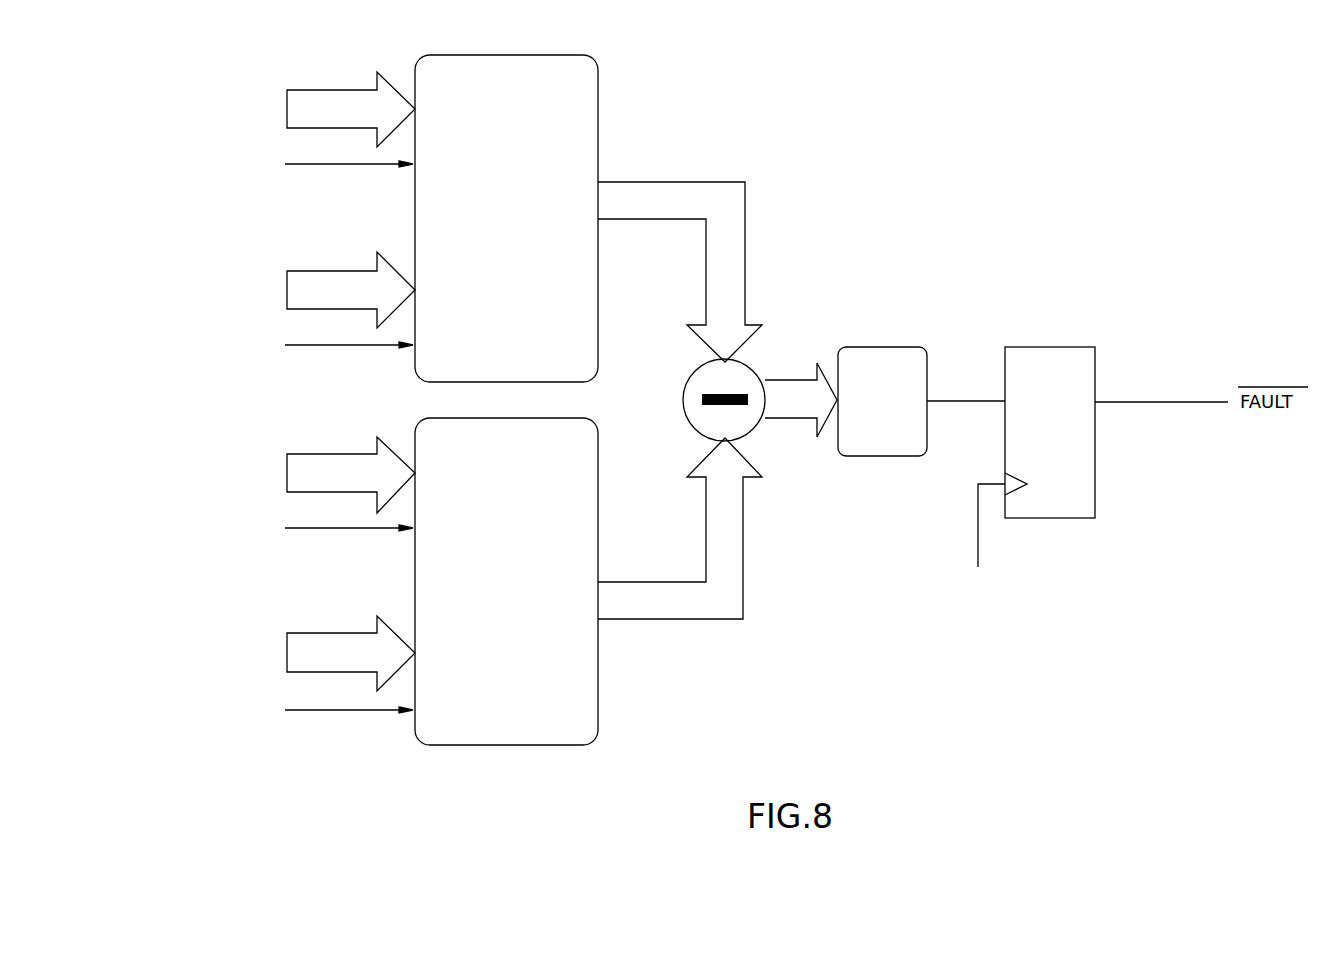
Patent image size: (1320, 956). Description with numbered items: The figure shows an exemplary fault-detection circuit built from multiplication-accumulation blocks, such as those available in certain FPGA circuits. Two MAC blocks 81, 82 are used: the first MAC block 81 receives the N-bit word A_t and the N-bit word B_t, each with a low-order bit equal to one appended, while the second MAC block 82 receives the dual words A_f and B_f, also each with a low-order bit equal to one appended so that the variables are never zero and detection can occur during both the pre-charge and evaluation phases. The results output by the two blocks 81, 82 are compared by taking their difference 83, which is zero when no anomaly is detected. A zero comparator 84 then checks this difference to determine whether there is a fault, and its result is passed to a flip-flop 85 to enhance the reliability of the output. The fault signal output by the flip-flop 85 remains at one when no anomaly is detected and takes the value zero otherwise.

The first MAC block 81 is at (504, 68).
The second MAC block 82 is at (508, 745).
The difference 83 is at (735, 378).
The zero comparator 84 is at (890, 358).
The flip-flop 85 is at (1048, 358).